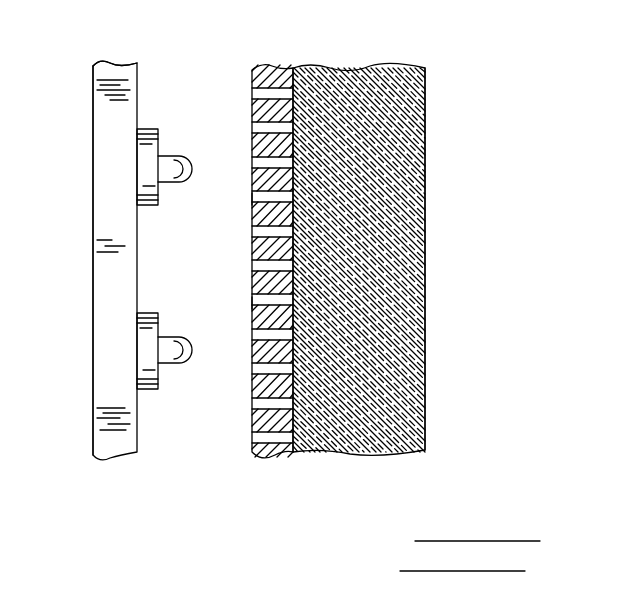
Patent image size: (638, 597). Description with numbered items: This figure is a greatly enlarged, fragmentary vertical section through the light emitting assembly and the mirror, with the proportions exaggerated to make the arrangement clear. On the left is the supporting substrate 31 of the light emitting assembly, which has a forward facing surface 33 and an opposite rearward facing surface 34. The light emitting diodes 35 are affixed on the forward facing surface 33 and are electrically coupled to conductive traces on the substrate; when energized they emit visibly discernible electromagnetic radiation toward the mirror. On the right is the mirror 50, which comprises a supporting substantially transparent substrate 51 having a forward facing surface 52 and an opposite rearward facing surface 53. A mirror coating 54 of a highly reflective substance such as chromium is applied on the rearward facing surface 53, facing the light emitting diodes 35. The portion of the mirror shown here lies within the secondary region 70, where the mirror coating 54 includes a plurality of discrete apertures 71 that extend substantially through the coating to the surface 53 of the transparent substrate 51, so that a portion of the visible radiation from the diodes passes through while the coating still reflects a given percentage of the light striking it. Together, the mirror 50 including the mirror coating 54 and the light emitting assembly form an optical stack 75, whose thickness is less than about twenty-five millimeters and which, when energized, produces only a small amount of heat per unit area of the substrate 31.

The supporting substrate 31 is at (110, 197).
The forward facing surface 33 is at (137, 90).
The rearward facing surface 34 is at (93, 143).
The light emitting diodes 35 is at (147, 315).
The mirror 50 is at (490, 220).
The supporting substantially transparent substrate 51 is at (392, 163).
The forward facing surface 52 is at (425, 330).
The rearward facing surface 53 is at (282, 423).
The mirror coating 54 is at (270, 83).
The secondary region 70 is at (222, 135).
The discrete apertures 71 is at (252, 198).
The optical stack 75 is at (275, 485).